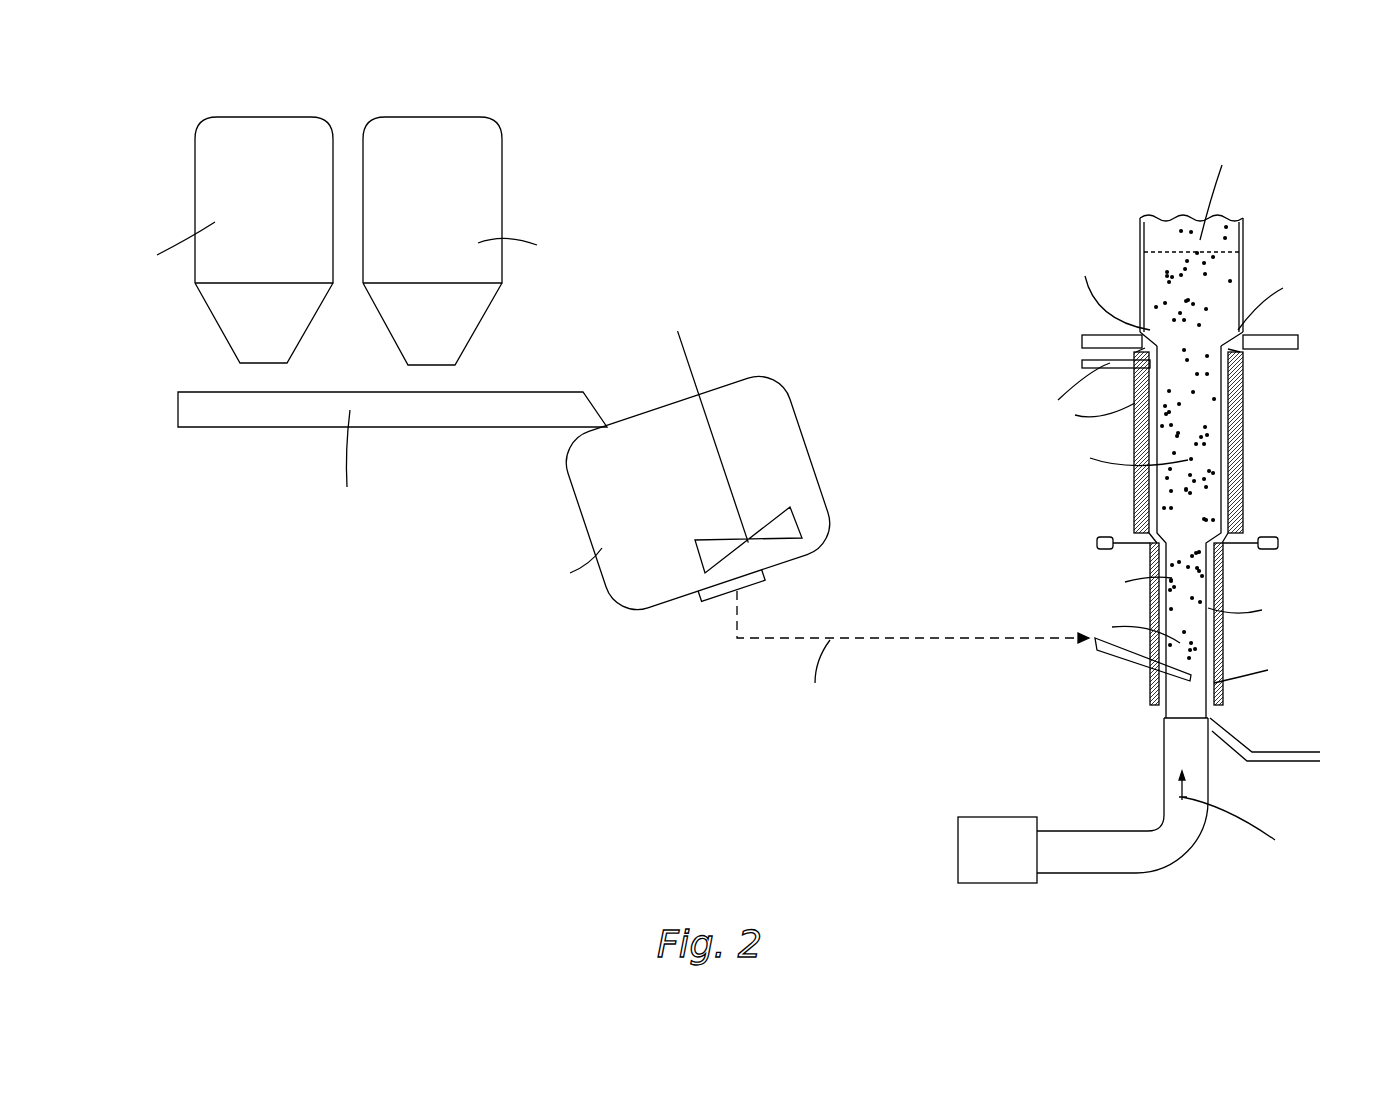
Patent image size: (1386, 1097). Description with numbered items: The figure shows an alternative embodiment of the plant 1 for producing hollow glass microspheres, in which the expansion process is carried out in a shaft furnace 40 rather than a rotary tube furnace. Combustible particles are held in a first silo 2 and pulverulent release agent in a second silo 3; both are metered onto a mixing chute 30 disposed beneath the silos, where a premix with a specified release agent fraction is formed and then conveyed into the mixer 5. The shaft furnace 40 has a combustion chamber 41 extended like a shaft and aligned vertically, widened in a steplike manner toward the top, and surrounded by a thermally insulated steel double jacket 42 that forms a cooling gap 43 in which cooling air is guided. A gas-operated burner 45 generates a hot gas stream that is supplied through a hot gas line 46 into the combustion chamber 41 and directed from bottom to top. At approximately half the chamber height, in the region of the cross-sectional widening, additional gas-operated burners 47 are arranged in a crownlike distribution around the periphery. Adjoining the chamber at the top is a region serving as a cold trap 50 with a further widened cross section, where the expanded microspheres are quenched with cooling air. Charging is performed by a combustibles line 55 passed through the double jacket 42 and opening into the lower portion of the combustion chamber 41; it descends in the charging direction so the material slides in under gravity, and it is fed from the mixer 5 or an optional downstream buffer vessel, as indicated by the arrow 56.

The plant 1 is at (896, 270).
The first silo 2 is at (195, 215).
The second silo 3 is at (502, 200).
The mixer 5 is at (720, 348).
The mixing chute 30 is at (270, 427).
The shaft furnace 40 is at (1118, 158).
The combustion chamber 41 is at (1222, 430).
The double jacket 42 is at (1243, 458).
The cooling gap 43 is at (1243, 400).
The gas-operated burner 45 is at (990, 817).
The hot gas line 46 is at (1185, 858).
The additional gas-operated burners 47 is at (1097, 550).
The cold trap 50 is at (1245, 268).
The combustibles line 55 is at (1120, 658).
The arrow 56 is at (912, 640).